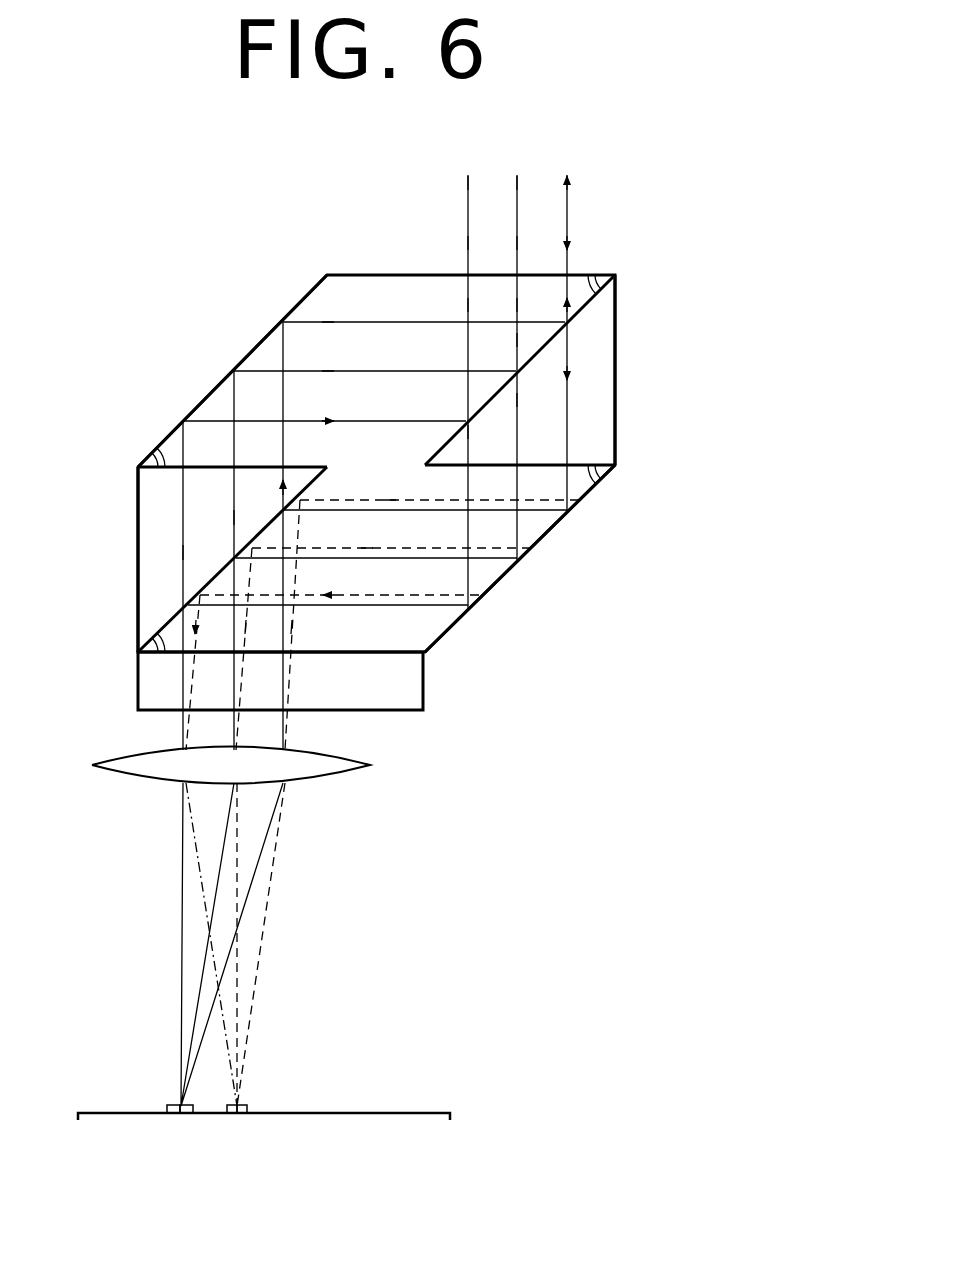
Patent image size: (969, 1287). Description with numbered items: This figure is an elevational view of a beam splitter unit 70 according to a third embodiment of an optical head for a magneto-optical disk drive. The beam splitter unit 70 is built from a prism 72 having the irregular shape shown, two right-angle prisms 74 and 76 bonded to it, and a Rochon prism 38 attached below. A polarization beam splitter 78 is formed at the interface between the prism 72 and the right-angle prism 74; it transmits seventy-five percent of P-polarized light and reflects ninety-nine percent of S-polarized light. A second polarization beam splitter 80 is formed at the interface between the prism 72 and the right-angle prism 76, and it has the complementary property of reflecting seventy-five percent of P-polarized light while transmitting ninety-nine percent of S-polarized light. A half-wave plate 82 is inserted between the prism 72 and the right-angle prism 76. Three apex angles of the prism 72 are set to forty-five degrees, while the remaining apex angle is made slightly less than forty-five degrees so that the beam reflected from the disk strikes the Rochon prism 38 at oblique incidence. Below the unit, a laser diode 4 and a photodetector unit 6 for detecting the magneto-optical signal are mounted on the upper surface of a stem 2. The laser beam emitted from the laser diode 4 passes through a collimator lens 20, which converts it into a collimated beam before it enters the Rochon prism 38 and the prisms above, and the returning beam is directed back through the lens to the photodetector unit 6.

The beam splitter unit 70 is at (369, 268).
The prism 72 is at (263, 330).
The right-angle prism 74 is at (144, 505).
The right-angle prism 76 is at (618, 350).
The polarization beam splitter 78 is at (206, 591).
The polarization beam splitter 80 is at (580, 312).
The half-wave plate 82 is at (580, 462).
The Rochon prism 38 is at (418, 697).
The collimator lens 20 is at (322, 770).
The stem 2 is at (400, 1112).
The photodetector unit 6 is at (168, 1105).
The laser diode 4 is at (245, 1105).